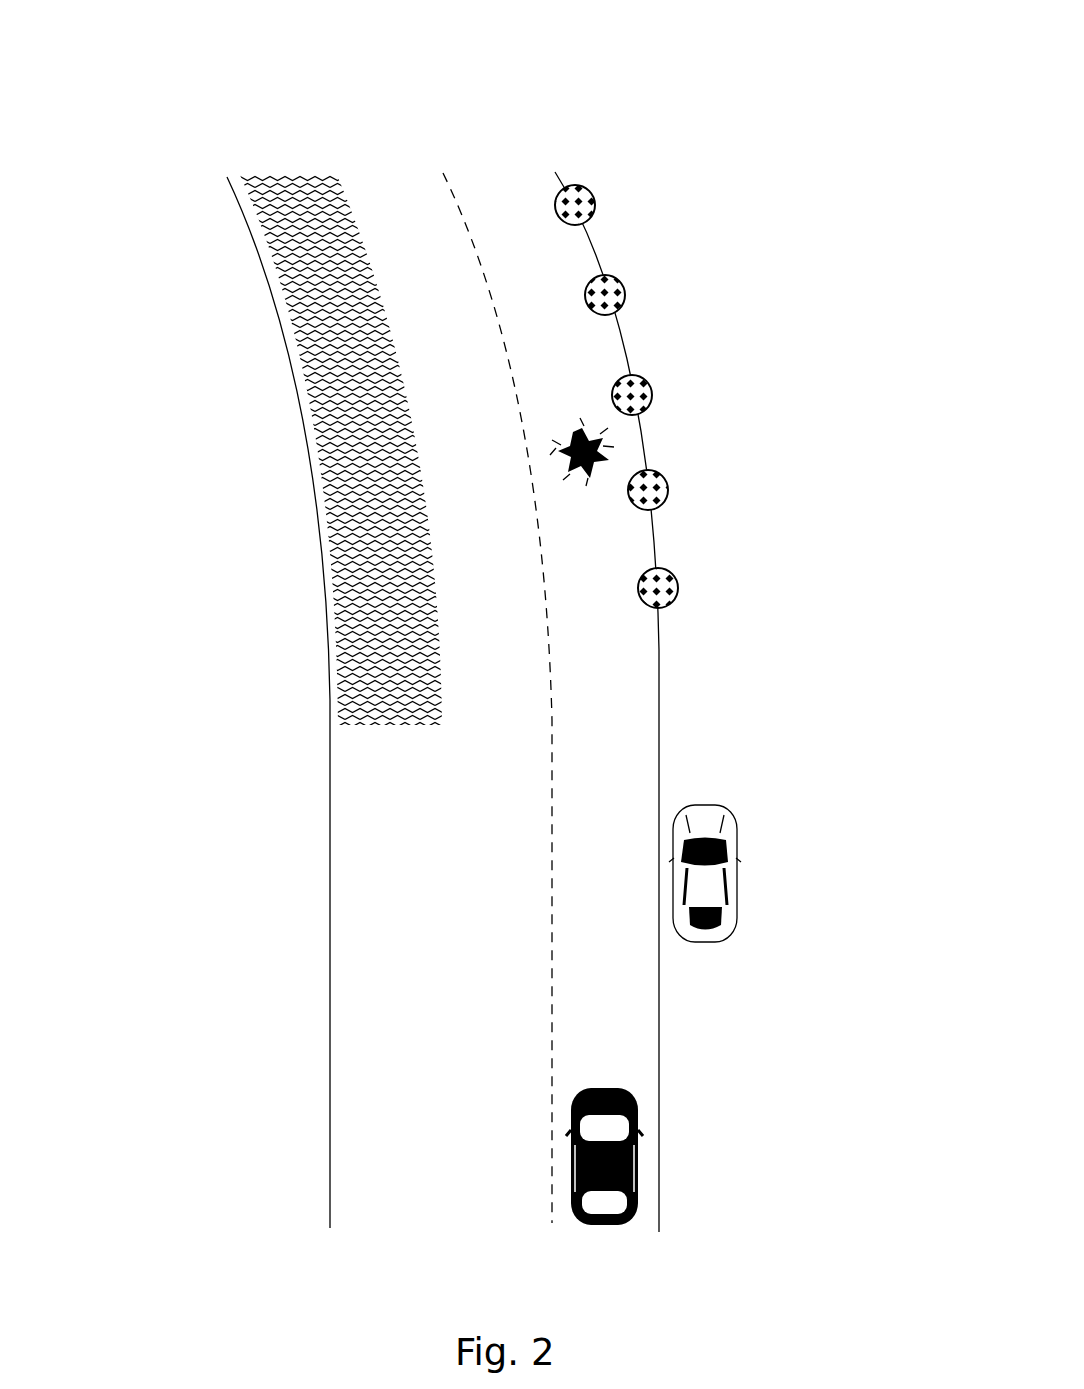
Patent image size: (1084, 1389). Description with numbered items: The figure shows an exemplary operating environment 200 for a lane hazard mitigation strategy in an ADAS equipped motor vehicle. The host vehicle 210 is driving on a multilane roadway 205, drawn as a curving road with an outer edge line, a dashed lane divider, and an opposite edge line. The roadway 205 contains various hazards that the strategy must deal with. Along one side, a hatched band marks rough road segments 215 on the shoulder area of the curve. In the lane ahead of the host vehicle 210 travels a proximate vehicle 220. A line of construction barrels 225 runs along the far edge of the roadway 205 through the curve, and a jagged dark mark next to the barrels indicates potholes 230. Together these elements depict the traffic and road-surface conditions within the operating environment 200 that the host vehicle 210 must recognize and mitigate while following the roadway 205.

The operating environment 200 is at (528, 28).
The multilane roadway 205 is at (322, 865).
The host vehicle 210 is at (655, 1157).
The rough road segments 215 is at (349, 505).
The proximate vehicle 220 is at (754, 867).
The construction barrels 225 is at (642, 303).
The potholes 230 is at (628, 453).